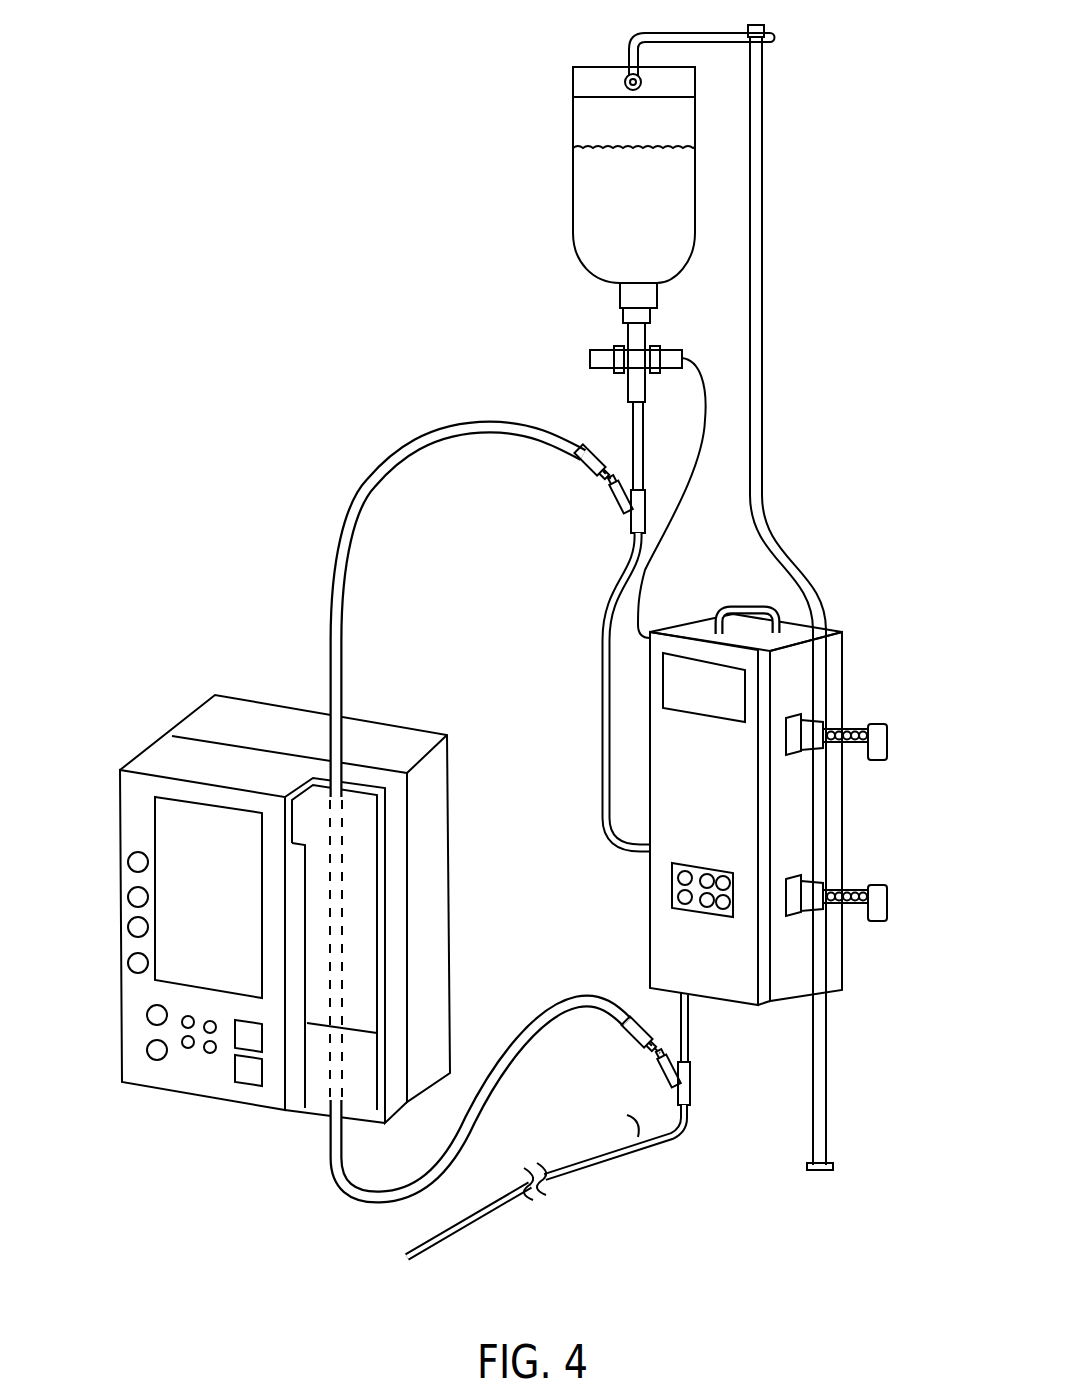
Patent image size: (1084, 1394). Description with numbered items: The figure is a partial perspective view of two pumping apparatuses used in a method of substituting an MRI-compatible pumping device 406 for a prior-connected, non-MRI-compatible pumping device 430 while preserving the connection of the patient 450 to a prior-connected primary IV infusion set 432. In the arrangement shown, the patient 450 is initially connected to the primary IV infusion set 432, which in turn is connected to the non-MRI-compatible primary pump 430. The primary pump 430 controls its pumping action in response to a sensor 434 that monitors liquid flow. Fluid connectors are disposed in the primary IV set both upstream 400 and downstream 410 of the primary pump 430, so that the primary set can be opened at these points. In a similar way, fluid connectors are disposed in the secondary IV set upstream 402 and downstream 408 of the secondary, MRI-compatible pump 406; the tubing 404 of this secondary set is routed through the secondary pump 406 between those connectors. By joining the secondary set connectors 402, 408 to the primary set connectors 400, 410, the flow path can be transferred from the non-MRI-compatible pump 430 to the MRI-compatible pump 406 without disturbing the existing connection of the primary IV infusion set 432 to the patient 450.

The upstream fluid connector 400 is at (623, 510).
The upstream fluid connector 402 is at (582, 467).
The tubing 404 is at (368, 482).
The MRI-compatible pumping device 406 is at (198, 710).
The downstream fluid connector 408 is at (633, 1043).
The downstream fluid connector 410 is at (693, 1090).
The non-MRI-compatible pumping device 430 is at (648, 945).
The primary IV infusion set 432 is at (600, 657).
The sensor 434 is at (703, 418).
The patient 450 is at (458, 1225).